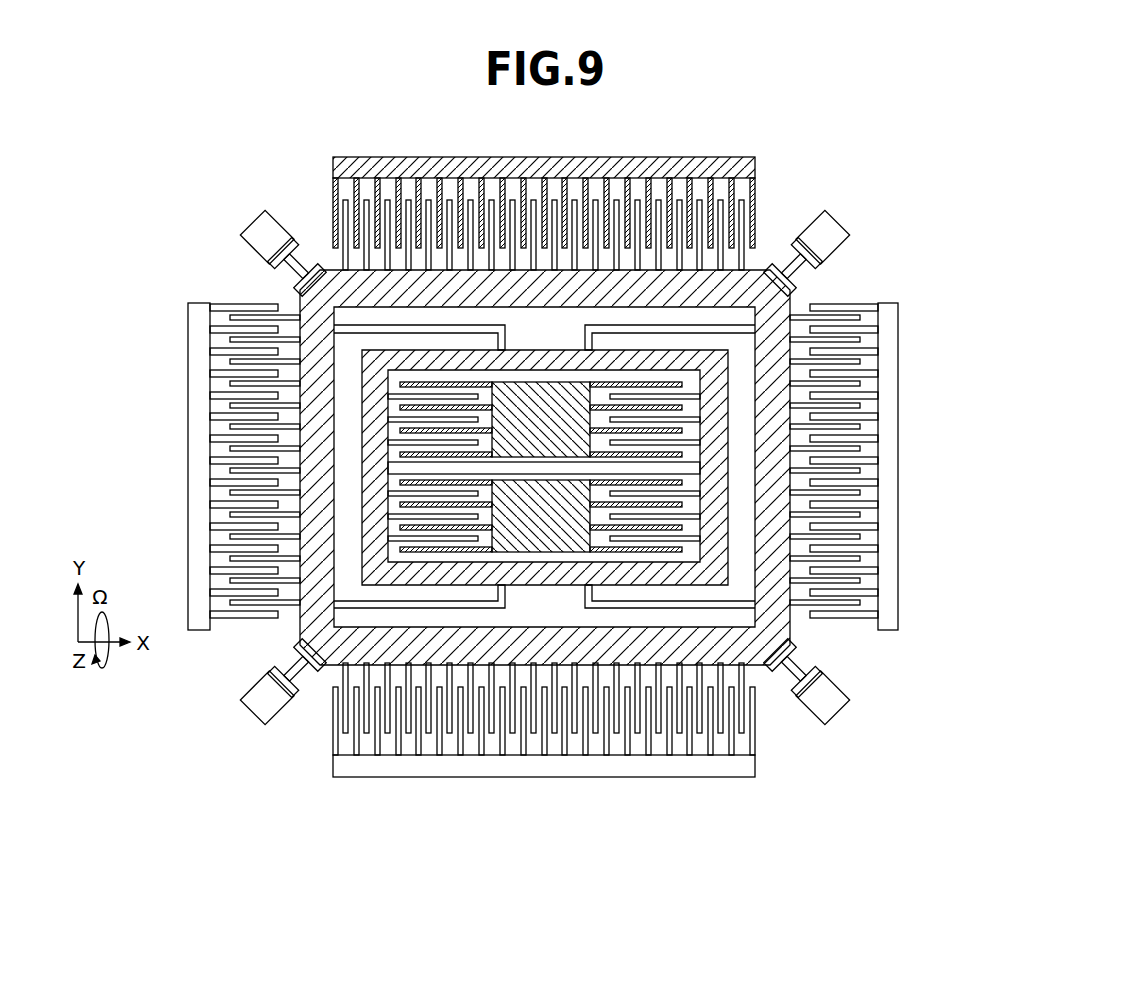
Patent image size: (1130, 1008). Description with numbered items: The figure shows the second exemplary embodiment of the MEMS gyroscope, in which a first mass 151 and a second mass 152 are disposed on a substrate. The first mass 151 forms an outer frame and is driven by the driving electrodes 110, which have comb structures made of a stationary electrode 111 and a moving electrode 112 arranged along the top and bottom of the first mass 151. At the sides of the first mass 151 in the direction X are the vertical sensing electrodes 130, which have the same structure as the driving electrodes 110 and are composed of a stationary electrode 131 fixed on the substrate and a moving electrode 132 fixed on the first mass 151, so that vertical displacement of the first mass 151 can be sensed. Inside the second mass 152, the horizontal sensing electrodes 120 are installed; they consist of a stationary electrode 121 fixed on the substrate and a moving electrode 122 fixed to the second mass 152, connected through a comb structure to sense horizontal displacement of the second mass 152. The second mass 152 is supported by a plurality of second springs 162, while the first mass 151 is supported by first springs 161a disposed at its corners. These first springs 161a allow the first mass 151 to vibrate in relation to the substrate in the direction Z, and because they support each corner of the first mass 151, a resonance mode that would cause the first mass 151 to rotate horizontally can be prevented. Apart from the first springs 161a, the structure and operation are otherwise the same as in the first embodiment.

The driving electrode 110 is at (541, 463).
The stationary electrode 111 is at (668, 165).
The moving electrode 112 is at (705, 198).
The horizontal sensing electrode 120 is at (722, 396).
The stationary electrode 121 is at (583, 395).
The moving electrode 122 is at (680, 425).
The vertical sensing electrode 130 is at (658, 466).
The stationary electrode 131 is at (893, 410).
The moving electrode 132 is at (838, 430).
The first mass 151 is at (305, 470).
The second mass 152 is at (365, 413).
The first spring 161a is at (832, 230).
The second spring 162 is at (378, 328).